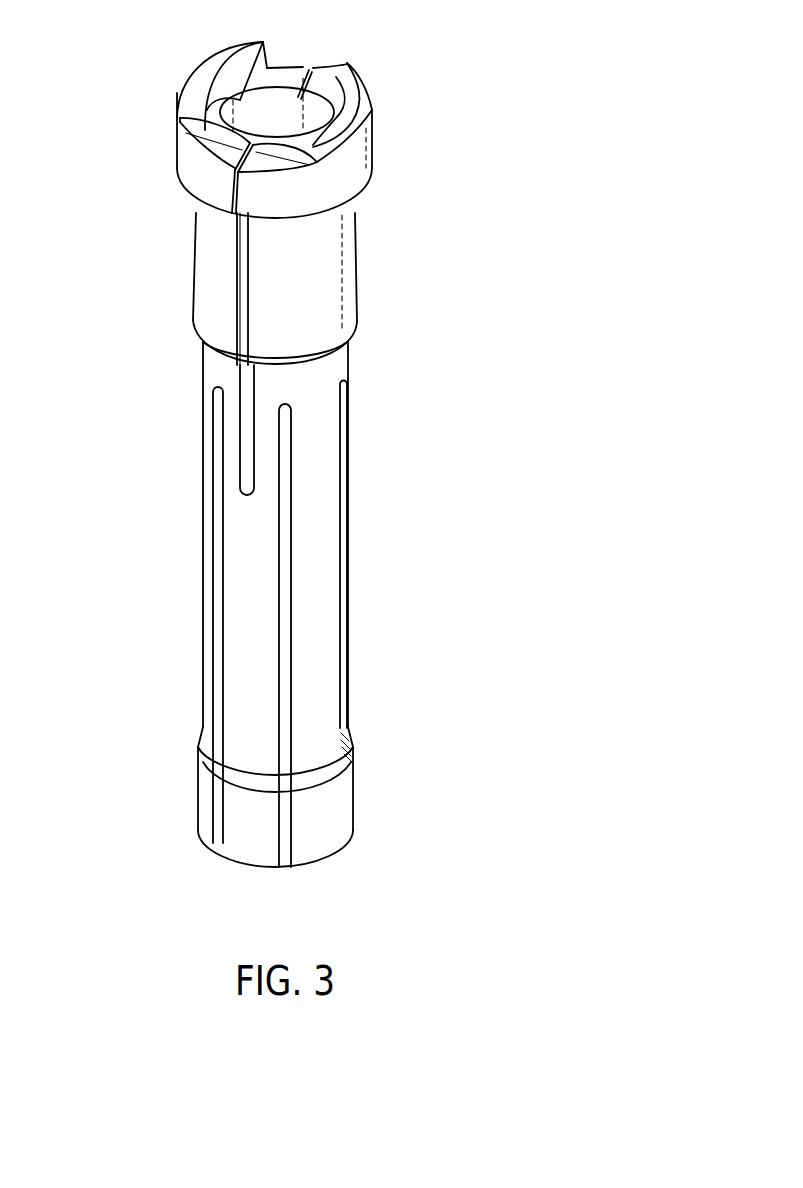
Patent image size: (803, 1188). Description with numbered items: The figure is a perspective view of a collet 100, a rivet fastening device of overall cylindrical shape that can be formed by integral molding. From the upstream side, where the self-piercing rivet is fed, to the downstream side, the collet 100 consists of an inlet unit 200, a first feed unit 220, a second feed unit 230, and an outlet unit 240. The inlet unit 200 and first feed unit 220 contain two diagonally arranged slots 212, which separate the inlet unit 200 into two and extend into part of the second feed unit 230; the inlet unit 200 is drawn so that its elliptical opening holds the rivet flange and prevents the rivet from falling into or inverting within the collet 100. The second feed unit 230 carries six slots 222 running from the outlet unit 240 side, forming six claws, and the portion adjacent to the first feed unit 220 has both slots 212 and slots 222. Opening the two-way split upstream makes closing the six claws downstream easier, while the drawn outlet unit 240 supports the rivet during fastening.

The collet 100 is at (145, 546).
The inlet unit 200 is at (335, 177).
The slots 212 is at (305, 72).
The first feed unit 220 is at (322, 273).
The slots 222 is at (218, 432).
The second feed unit 230 is at (312, 566).
The outlet unit 240 is at (328, 811).